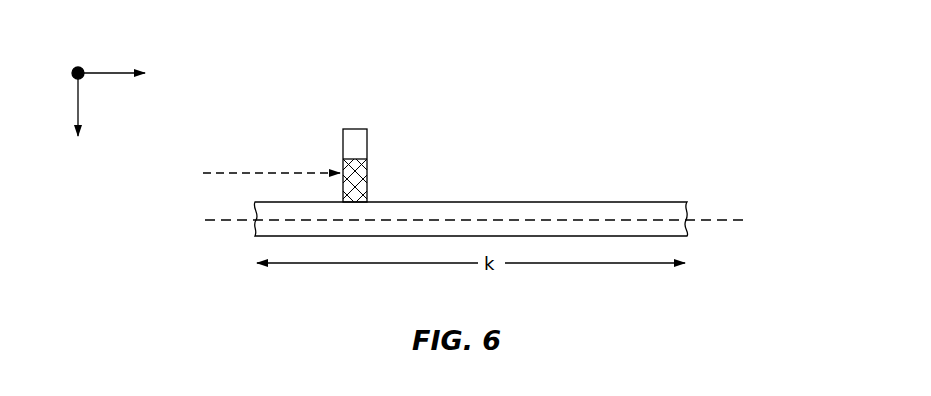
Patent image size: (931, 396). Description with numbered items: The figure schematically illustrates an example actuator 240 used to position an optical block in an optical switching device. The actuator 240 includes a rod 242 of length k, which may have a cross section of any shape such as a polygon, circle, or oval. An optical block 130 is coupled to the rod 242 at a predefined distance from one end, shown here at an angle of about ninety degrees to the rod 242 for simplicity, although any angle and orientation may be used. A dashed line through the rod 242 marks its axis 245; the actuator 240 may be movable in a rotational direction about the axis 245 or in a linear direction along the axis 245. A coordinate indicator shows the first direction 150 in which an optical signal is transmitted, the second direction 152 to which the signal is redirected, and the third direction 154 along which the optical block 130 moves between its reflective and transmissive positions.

The optical block 130 is at (345, 143).
The first direction 150 is at (127, 63).
The second direction 152 is at (98, 108).
The third direction 154 is at (74, 68).
The actuator 240 is at (552, 79).
The rod 242 is at (428, 212).
The axis 245 is at (723, 220).